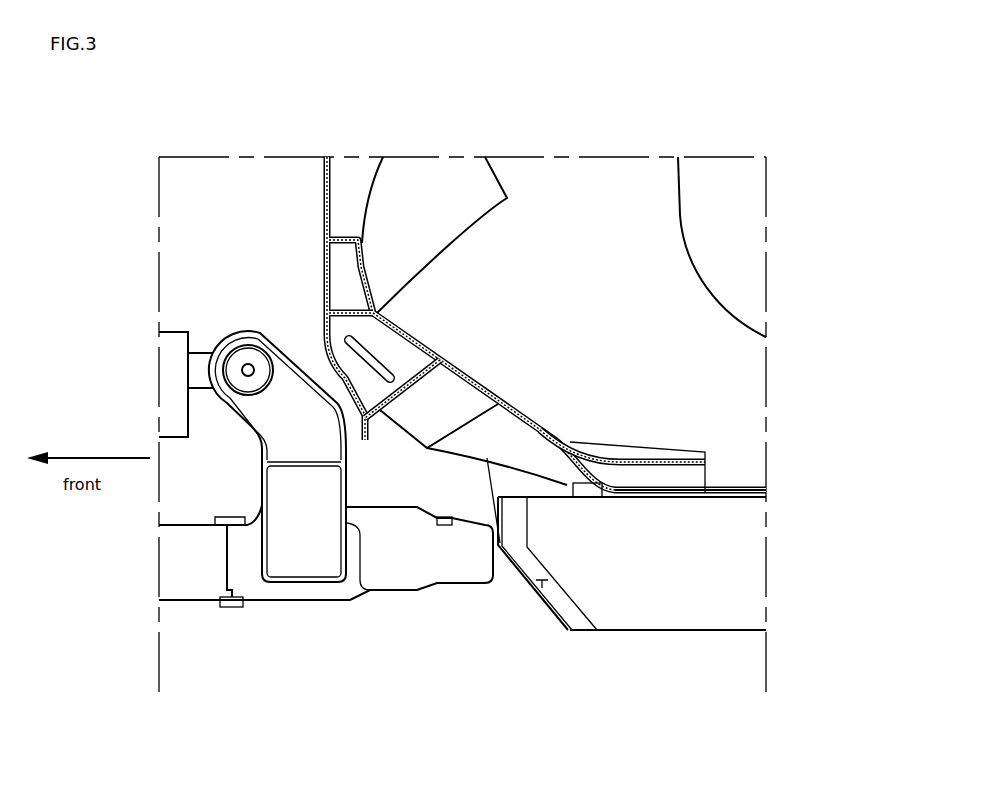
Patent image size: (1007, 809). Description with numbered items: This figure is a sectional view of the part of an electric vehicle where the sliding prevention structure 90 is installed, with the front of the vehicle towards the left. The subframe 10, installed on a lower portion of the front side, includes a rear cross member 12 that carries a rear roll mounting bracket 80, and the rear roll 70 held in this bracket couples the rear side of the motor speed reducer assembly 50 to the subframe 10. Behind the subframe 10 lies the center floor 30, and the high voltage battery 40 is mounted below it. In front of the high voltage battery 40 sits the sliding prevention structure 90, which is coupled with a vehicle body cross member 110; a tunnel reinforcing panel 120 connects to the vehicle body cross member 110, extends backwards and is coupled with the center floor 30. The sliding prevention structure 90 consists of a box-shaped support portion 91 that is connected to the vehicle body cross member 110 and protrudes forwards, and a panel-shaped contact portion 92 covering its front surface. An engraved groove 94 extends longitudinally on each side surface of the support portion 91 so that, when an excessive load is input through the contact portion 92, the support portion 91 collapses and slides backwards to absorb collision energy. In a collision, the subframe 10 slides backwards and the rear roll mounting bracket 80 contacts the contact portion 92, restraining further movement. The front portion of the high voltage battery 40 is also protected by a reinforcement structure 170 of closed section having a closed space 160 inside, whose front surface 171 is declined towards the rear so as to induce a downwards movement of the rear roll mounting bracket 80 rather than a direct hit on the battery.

The subframe 10 is at (195, 588).
The rear cross member 12 is at (243, 547).
The center floor 30 is at (727, 483).
The high voltage battery 40 is at (717, 574).
The motor speed reducer assembly 50 is at (175, 345).
The rear roll 70 is at (200, 372).
The rear roll mounting bracket 80 is at (240, 424).
The sliding prevention structure 90 is at (376, 440).
The support portion 91 is at (398, 358).
The contact portion 92 is at (340, 371).
The engraved groove 94 is at (360, 340).
The vehicle body cross member 110 is at (465, 378).
The tunnel reinforcing panel 120 is at (645, 460).
The closed space 160 is at (540, 588).
The reinforcement structure 170 is at (588, 636).
The front surface 171 is at (527, 577).